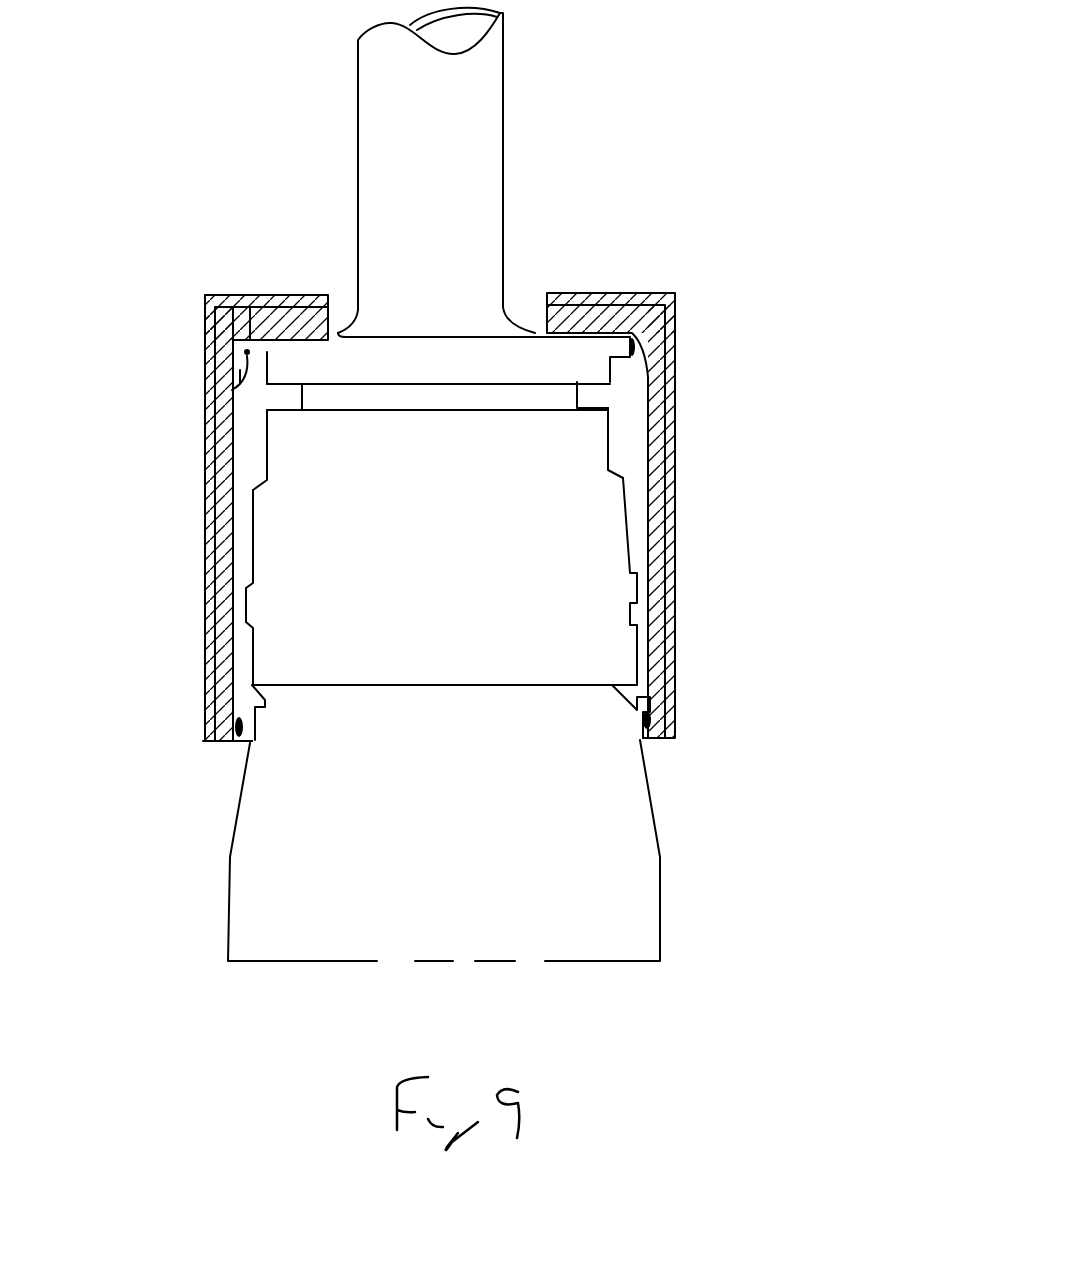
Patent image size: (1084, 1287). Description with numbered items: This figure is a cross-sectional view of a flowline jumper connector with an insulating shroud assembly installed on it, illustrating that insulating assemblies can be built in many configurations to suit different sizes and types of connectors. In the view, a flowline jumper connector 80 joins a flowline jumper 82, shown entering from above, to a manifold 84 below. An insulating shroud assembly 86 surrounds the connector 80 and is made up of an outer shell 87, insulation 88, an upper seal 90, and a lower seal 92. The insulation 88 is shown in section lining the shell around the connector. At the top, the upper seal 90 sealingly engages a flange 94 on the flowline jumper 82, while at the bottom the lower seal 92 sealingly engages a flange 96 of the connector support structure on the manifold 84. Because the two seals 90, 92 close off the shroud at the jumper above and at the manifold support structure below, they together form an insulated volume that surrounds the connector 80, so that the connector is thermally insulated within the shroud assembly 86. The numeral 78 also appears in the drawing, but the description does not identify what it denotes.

The sleeve 78 is at (230, 480).
The flowline jumper connector 80 is at (575, 637).
The flowline jumper 82 is at (490, 118).
The manifold 84 is at (620, 927).
The insulating shroud assembly 86 is at (760, 420).
The outer shell 87 is at (653, 557).
The insulation 88 is at (663, 492).
The upper seal 90 is at (243, 300).
The lower seal 92 is at (213, 747).
The flange 94 is at (237, 400).
The flange 96 is at (240, 703).